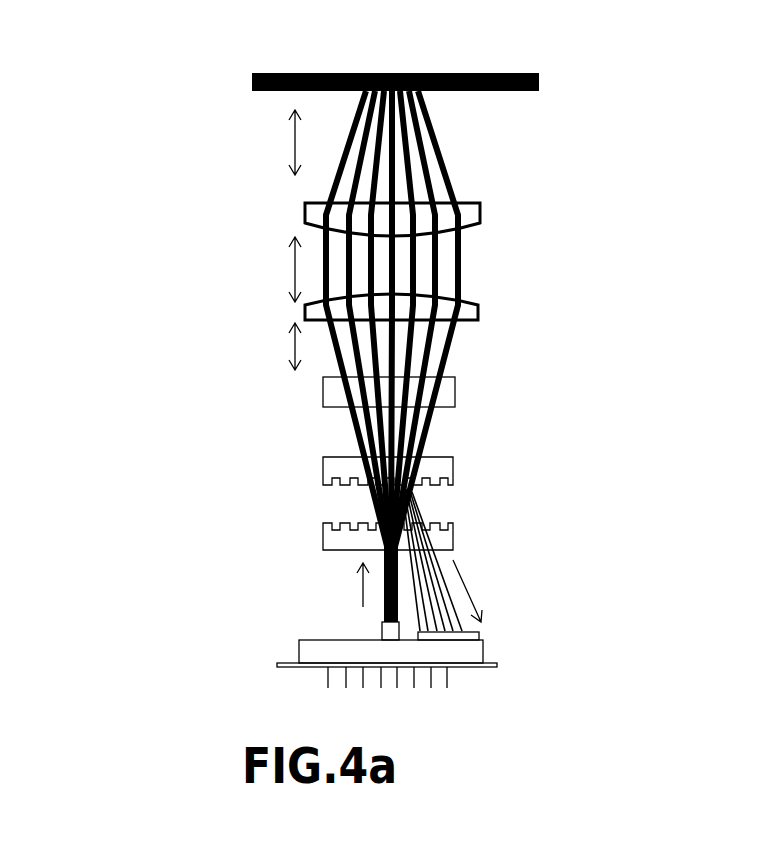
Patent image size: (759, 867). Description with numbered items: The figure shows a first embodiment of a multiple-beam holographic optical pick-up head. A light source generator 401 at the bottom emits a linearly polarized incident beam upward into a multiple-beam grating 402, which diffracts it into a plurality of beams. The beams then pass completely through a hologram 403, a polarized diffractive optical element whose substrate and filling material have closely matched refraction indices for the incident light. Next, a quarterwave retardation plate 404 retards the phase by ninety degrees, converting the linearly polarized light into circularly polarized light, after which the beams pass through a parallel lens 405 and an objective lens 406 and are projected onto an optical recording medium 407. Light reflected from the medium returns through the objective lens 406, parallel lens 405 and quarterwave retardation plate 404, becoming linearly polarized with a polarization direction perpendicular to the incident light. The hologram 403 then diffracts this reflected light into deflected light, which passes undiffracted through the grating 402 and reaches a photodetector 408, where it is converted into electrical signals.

The light source generator 401 is at (378, 633).
The multiple-beam grating 402 is at (457, 535).
The hologram 403 is at (457, 463).
The quarterwave retardation plate 404 is at (322, 393).
The parallel lens 405 is at (493, 307).
The objective lens 406 is at (487, 202).
The optical recording medium 407 is at (230, 81).
The photodetector 408 is at (483, 630).